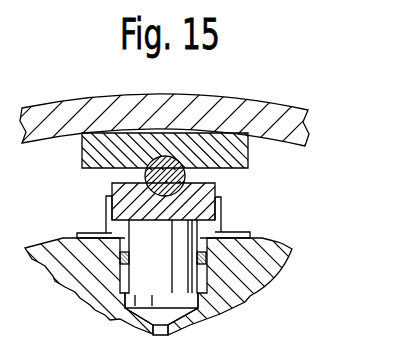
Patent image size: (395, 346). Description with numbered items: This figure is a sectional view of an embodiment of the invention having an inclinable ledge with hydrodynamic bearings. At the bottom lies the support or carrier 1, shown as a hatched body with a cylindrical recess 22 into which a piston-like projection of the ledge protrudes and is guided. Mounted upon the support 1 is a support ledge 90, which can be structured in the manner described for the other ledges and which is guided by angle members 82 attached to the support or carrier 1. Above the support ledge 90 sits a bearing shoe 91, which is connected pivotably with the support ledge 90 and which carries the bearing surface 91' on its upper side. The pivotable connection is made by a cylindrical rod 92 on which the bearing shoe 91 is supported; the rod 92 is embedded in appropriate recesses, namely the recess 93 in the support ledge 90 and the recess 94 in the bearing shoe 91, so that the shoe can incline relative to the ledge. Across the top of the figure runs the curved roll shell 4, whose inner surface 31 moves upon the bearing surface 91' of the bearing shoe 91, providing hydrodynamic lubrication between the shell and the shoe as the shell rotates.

The support 1 is at (262, 253).
The roll shell 4 is at (44, 107).
The cylindrical recess 22 is at (192, 300).
The inner surface 31 is at (60, 142).
The angle member 82 is at (106, 228).
The support ledge 90 is at (198, 186).
The bearing shoe 91 is at (183, 154).
The bearing surface 91' is at (101, 94).
The cylindrical rod 92 is at (143, 173).
The recess 93 is at (221, 207).
The recess 94 is at (181, 163).